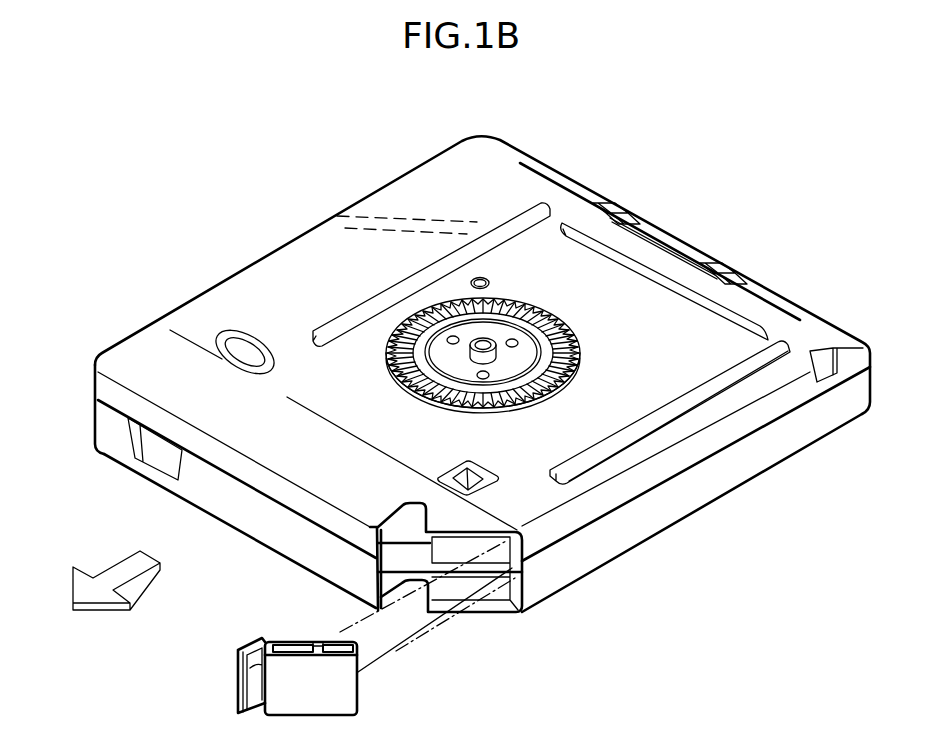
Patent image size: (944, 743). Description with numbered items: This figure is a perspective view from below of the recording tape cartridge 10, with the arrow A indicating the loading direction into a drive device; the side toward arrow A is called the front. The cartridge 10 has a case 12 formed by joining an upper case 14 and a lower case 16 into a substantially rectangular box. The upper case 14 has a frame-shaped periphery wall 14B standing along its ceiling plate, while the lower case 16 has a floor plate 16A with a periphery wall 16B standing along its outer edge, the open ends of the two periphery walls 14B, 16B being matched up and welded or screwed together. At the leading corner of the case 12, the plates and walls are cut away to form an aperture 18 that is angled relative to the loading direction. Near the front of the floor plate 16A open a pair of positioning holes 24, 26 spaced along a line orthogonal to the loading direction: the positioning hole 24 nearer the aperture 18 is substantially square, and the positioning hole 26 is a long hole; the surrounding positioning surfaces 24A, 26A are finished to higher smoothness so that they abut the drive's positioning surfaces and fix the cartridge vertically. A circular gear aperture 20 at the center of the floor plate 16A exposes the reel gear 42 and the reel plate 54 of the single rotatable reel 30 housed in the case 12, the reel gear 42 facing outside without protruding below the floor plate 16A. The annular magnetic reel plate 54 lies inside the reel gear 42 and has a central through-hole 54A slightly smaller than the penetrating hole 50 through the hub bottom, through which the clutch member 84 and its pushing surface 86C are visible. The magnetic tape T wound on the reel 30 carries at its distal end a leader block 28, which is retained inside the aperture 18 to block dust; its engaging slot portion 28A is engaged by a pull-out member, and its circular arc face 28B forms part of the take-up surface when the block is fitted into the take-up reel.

The recording tape cartridge 10 is at (300, 213).
The case 12 is at (784, 482).
The upper case 14 is at (683, 489).
The periphery wall 14B is at (308, 560).
The lower case 16 is at (683, 451).
The floor plate 16A is at (277, 453).
The periphery wall 16B is at (295, 500).
The aperture 18 is at (398, 532).
The gear aperture 20 is at (576, 343).
The positioning hole 24 is at (477, 467).
The positioning surface 24A is at (462, 468).
The positioning hole 26 is at (245, 350).
The positioning surface 26A is at (233, 350).
The leader block 28 is at (363, 697).
The engaging slot portion 28A is at (237, 668).
The circular arc face 28B is at (355, 655).
The reel 30 is at (568, 322).
The reel gear 42 is at (542, 304).
The penetrating hole 50 is at (483, 352).
The reel plate 54 is at (491, 336).
The through-hole 54A is at (536, 368).
The clutch member 84 is at (466, 352).
The pushing surface 86C is at (473, 334).
The arrow A is at (130, 563).
The magnetic tape T is at (403, 630).